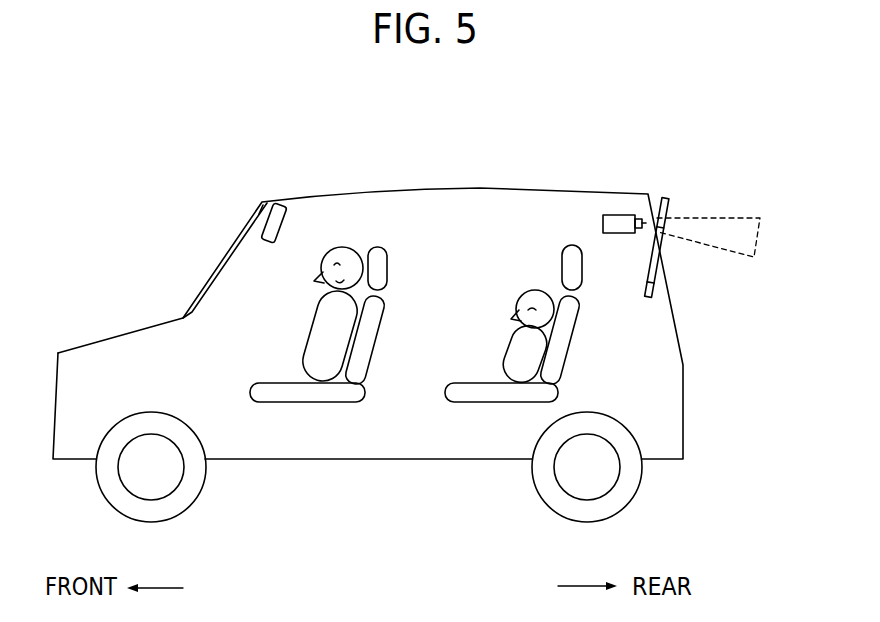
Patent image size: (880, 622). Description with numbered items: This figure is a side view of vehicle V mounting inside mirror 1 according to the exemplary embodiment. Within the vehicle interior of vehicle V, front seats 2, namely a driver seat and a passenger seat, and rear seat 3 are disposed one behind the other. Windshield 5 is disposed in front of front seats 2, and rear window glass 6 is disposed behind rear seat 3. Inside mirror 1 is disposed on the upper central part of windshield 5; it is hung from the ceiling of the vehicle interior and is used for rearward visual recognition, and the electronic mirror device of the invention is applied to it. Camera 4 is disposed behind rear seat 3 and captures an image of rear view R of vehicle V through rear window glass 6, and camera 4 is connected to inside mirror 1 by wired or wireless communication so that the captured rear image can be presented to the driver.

The vehicle V is at (480, 188).
The inside mirror 1 is at (292, 200).
The front seats 2 is at (322, 392).
The rear seat 3 is at (503, 393).
The camera 4 is at (617, 222).
The windshield 5 is at (232, 248).
The rear window glass 6 is at (668, 280).
The rear view R is at (716, 237).